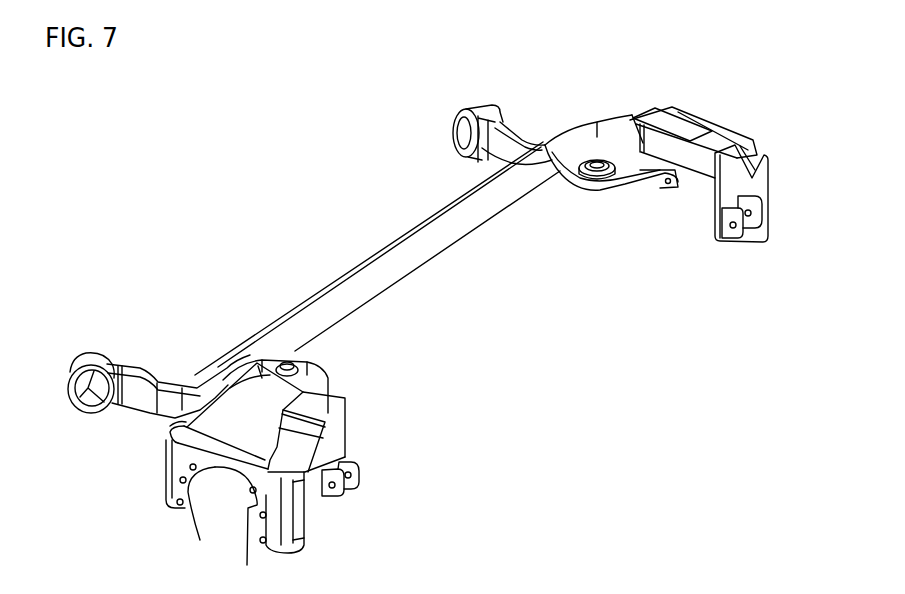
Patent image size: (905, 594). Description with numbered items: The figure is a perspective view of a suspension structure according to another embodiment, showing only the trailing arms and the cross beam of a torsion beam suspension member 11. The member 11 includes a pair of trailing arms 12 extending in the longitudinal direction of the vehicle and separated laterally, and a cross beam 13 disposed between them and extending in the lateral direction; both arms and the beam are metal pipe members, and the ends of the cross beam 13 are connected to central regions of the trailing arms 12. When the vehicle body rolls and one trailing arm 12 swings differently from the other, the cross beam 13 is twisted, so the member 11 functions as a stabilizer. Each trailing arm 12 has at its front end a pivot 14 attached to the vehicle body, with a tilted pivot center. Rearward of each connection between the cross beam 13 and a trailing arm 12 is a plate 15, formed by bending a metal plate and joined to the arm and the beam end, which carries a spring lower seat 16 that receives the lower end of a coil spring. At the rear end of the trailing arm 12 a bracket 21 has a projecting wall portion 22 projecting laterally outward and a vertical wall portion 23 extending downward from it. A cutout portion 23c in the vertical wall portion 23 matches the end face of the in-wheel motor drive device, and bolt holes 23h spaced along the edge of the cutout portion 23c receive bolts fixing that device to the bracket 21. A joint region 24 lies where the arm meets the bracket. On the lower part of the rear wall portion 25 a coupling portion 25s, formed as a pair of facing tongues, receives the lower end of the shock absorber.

The torsion beam suspension member 11 is at (276, 231).
The trailing arm 12 is at (137, 368).
The cross beam 13 is at (410, 256).
The pivot 14 is at (80, 355).
The plate 15 is at (330, 364).
The spring lower seat 16 is at (290, 366).
The bracket 21 is at (300, 548).
The projecting wall portion 22 is at (246, 400).
The vertical wall portion 23 is at (177, 508).
The bolt hole 23h is at (200, 538).
The cutout portion 23c is at (247, 556).
The joint portion 24 is at (173, 425).
The rear wall portion 25 is at (310, 496).
The coupling portion 25s is at (363, 482).